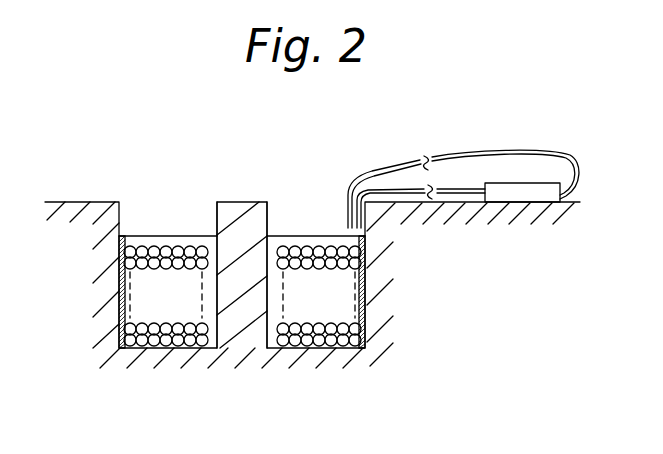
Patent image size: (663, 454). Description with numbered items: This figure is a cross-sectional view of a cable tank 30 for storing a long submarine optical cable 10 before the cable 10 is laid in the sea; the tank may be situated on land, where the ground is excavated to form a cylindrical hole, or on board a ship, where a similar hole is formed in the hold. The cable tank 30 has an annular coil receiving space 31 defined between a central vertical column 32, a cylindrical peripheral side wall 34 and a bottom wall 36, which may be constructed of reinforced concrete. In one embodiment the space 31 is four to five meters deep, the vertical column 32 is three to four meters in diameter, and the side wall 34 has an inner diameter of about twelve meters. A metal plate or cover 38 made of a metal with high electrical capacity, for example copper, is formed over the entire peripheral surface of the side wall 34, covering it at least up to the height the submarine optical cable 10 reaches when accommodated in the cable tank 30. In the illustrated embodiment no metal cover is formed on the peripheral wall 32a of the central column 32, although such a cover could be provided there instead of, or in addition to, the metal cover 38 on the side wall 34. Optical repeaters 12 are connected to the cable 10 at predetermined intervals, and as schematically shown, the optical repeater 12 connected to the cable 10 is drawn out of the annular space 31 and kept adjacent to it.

The submarine optical cable 10 is at (367, 336).
The optical repeater 12 is at (535, 202).
The cable tank 30 is at (289, 192).
The annular coil receiving space 31 is at (204, 244).
The central vertical column 32 is at (247, 202).
The peripheral wall of the central column 32a is at (217, 217).
The cylindrical peripheral side wall 34 is at (120, 218).
The bottom wall 36 is at (172, 348).
The metal plate or cover 38 is at (364, 294).